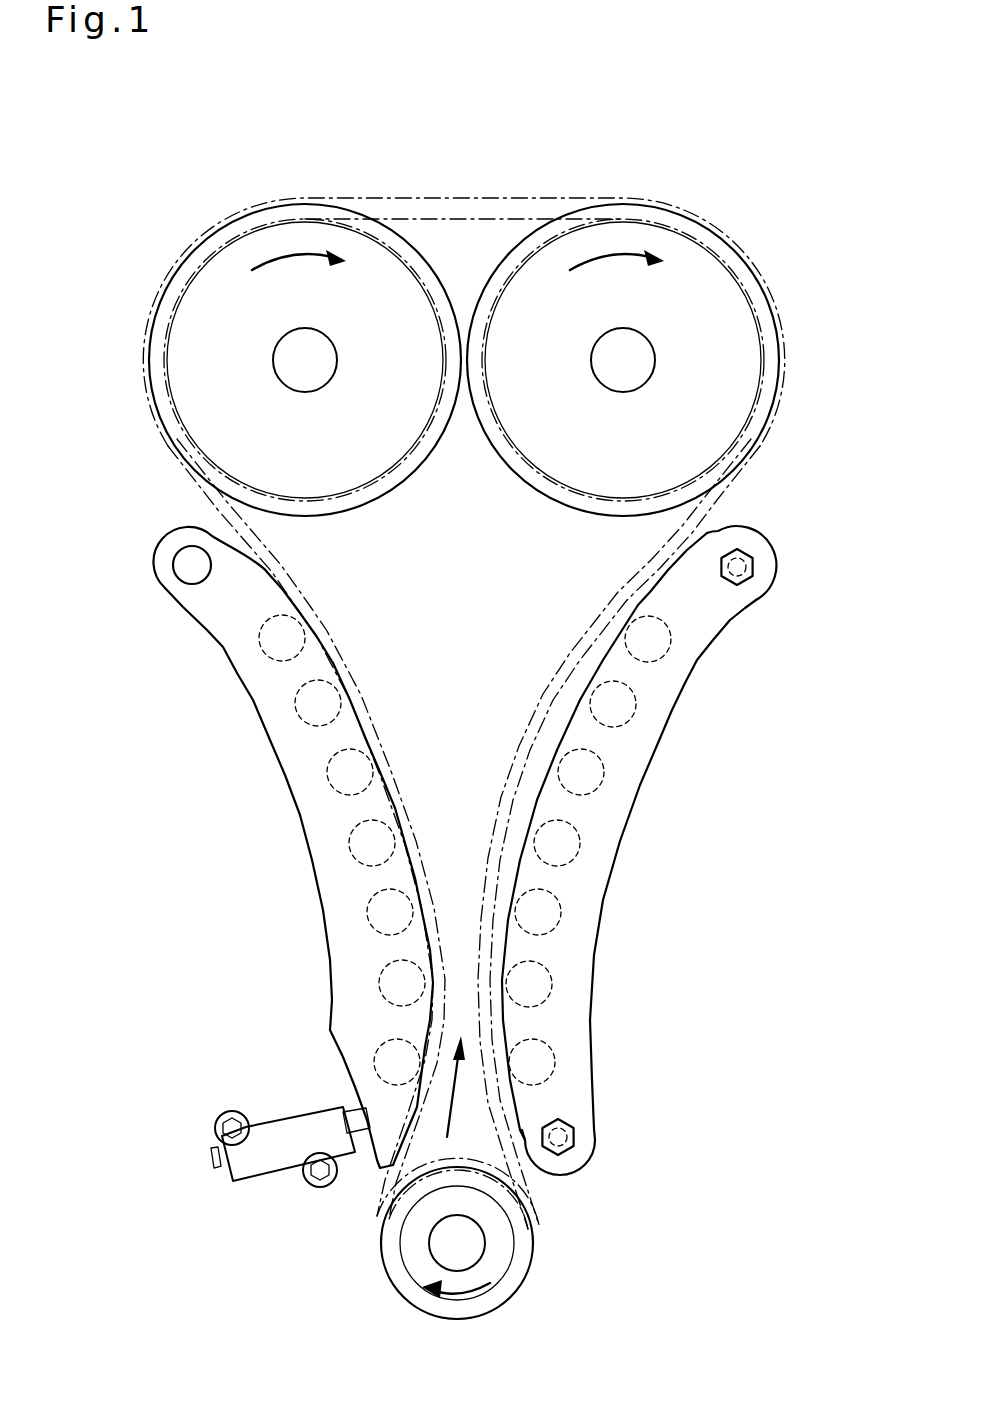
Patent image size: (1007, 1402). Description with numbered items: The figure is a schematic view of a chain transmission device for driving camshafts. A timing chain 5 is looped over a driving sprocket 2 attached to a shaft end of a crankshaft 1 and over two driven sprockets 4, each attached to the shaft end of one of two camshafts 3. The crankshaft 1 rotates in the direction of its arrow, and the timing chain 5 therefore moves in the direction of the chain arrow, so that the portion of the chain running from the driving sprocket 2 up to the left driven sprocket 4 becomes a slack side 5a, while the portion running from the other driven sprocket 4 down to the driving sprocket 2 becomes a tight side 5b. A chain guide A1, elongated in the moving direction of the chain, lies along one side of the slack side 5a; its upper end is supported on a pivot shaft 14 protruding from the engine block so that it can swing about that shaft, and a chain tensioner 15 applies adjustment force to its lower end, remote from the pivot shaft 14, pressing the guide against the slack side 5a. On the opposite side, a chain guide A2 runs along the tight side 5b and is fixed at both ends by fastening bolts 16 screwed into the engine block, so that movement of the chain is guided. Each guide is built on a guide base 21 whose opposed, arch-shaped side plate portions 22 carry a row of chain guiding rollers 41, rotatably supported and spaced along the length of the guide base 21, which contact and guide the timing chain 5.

The crankshaft 1 is at (448, 1245).
The driving sprocket 2 is at (410, 1225).
The camshaft 3 is at (305, 358).
The driven sprocket 4 is at (358, 245).
The timing chain 5 is at (463, 198).
The slack side 5a is at (316, 621).
The tight side 5b is at (593, 657).
The pivot shaft 14 is at (192, 565).
The chain tensioner 15 is at (296, 1115).
The fastening bolt 16 is at (740, 566).
The guide base 21 is at (218, 640).
The side plate portion 22 is at (296, 794).
The chain guiding roller 41 is at (270, 660).
The chain guide A1 is at (228, 830).
The chain guide A2 is at (689, 858).